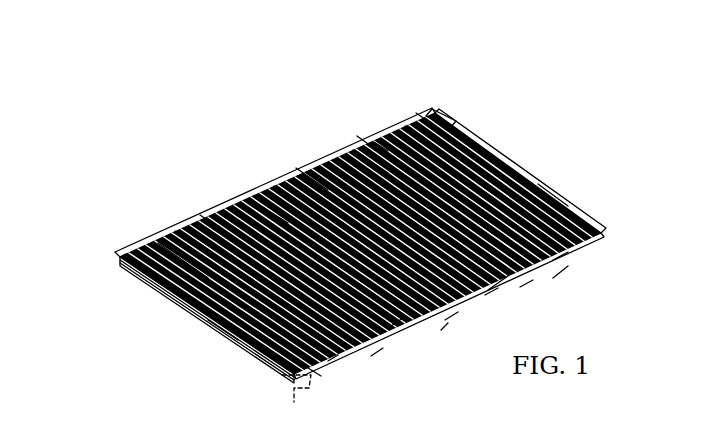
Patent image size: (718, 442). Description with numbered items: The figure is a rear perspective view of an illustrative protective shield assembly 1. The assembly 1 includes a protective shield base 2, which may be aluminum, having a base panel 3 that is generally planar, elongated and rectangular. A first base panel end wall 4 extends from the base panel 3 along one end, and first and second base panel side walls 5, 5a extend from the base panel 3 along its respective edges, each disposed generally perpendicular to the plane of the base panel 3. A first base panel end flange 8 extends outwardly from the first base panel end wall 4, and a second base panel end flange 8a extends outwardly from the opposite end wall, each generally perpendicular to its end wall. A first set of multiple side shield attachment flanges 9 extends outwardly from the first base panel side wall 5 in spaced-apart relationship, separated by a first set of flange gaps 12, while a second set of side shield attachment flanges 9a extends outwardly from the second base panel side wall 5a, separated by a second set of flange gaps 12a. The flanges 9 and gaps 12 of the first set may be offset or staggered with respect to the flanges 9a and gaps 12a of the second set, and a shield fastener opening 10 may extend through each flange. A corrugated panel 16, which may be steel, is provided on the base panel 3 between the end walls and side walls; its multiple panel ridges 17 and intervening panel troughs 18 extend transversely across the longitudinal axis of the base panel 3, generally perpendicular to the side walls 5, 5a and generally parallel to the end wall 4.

The protective shield assembly 1 is at (218, 152).
The protective shield base 2 is at (296, 401).
The base panel 3 is at (633, 250).
The first base panel end wall 4 is at (596, 226).
The first base panel side wall 5 is at (366, 132).
The second base panel side wall 5a is at (490, 278).
The first base panel end flange 8 is at (215, 322).
The second base panel end flange 8a is at (545, 190).
The side shield attachment flanges 9 is at (150, 235).
The side shield attachment flanges 9a is at (545, 252).
The shield fastener opening 10 is at (167, 223).
The flange gaps 12 is at (190, 200).
The flange gaps 12a is at (518, 280).
The corrugated panel 16 is at (153, 289).
The panel ridges 17 is at (120, 250).
The panel troughs 18 is at (440, 118).